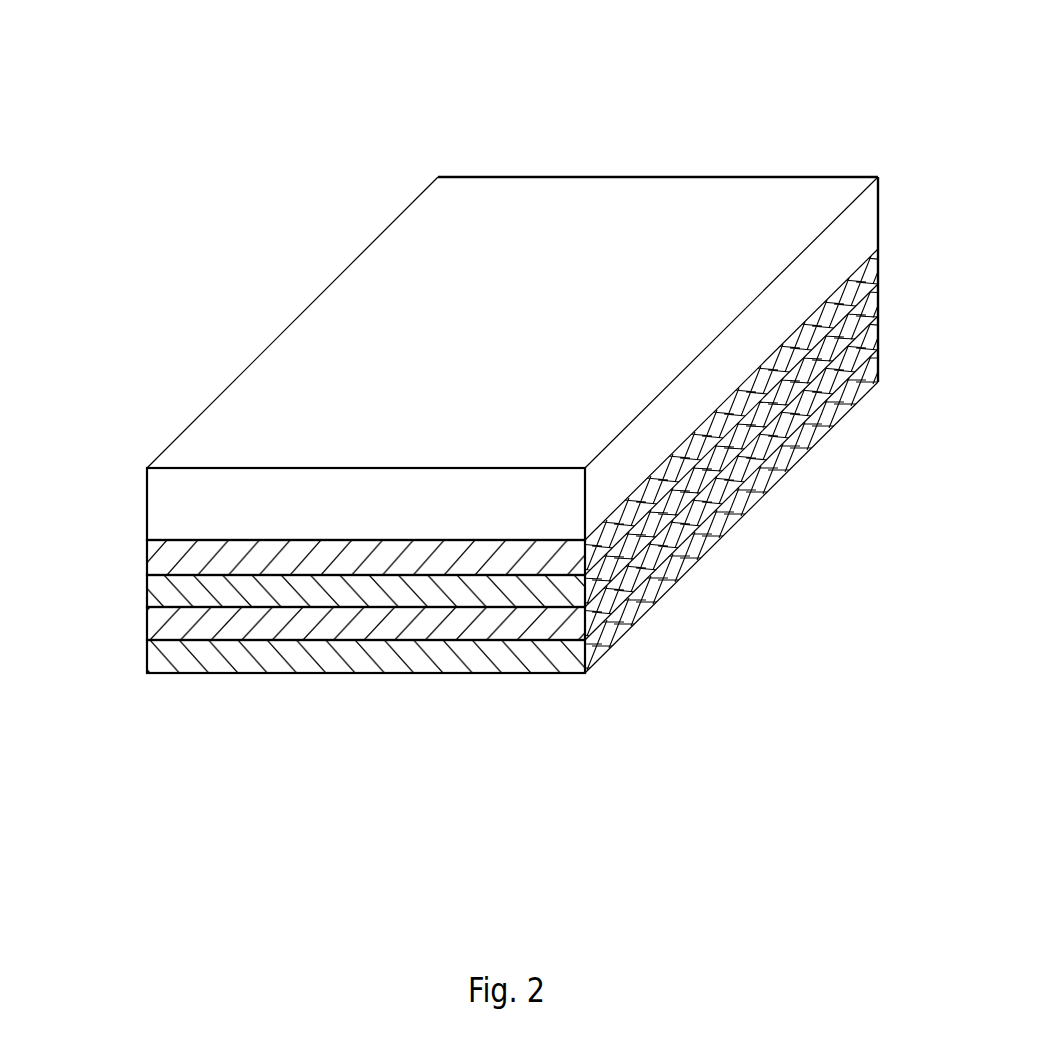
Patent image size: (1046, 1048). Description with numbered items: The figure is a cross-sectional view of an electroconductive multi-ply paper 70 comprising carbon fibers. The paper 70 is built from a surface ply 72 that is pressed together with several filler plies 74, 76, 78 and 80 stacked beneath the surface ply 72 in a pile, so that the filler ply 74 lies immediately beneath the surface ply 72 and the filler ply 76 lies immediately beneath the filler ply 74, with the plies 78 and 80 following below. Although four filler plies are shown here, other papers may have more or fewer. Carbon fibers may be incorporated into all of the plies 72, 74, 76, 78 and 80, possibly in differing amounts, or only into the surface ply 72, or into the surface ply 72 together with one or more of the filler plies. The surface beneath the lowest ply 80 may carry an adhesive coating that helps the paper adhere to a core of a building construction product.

The electroconductive multi-ply paper 70 is at (718, 118).
The surface ply 72 is at (255, 378).
The filler ply 74 is at (187, 558).
The filler ply 76 is at (222, 589).
The filler ply 78 is at (543, 622).
The filler ply 80 is at (410, 660).